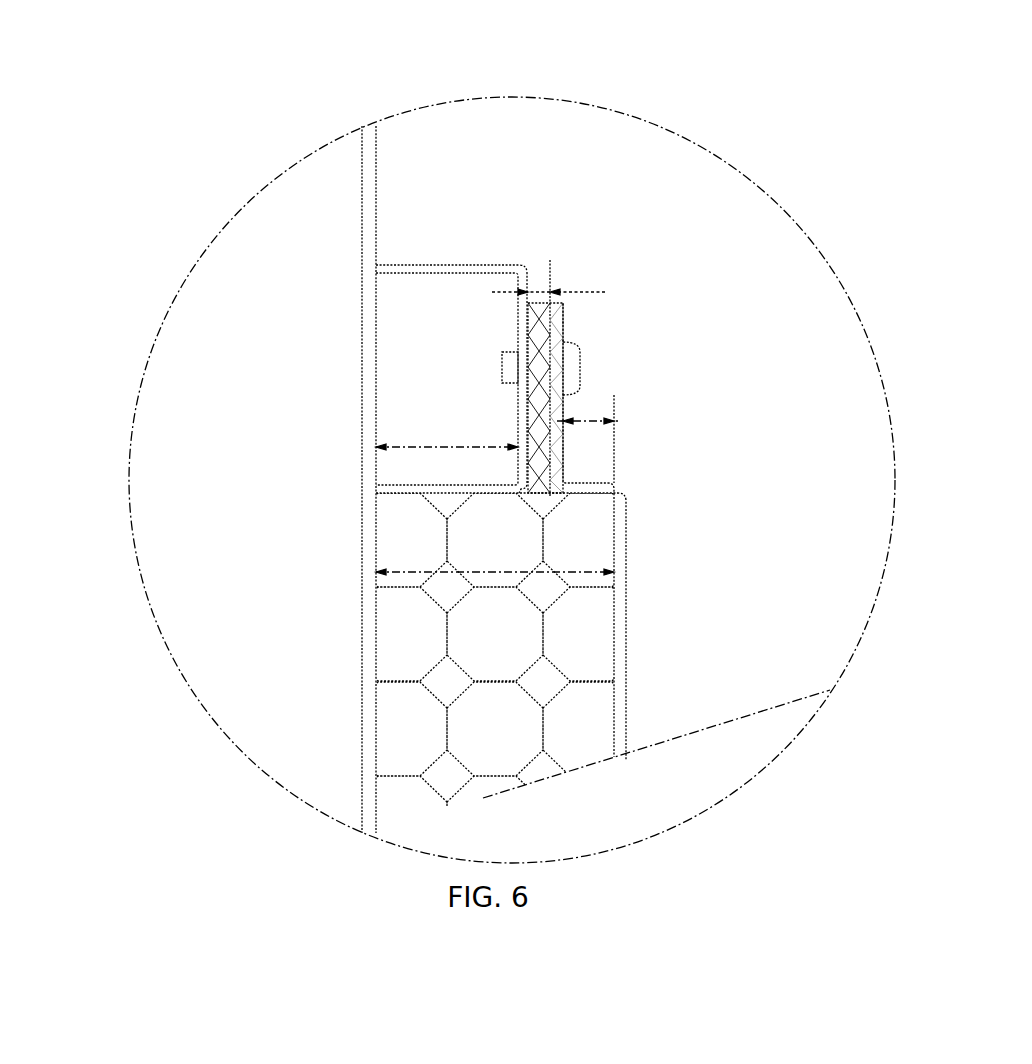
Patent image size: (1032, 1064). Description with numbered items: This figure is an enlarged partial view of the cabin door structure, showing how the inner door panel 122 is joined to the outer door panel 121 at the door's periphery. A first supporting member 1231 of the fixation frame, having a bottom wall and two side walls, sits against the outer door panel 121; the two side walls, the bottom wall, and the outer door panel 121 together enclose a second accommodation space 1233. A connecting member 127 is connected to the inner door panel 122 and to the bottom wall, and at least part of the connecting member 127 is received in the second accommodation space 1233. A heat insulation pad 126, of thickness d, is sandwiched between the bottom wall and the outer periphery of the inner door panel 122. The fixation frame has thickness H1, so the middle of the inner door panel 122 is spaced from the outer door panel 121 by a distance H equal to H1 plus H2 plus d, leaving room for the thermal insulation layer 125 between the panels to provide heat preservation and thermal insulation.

The outer door panel 121 is at (363, 536).
The first supporting member 1231 is at (435, 273).
The second accommodation space 1233 is at (390, 408).
The connecting member 127 is at (503, 365).
The heat insulation pad 126 is at (550, 326).
The inner door panel 122 is at (627, 583).
The thermal insulation layer 125 is at (437, 701).